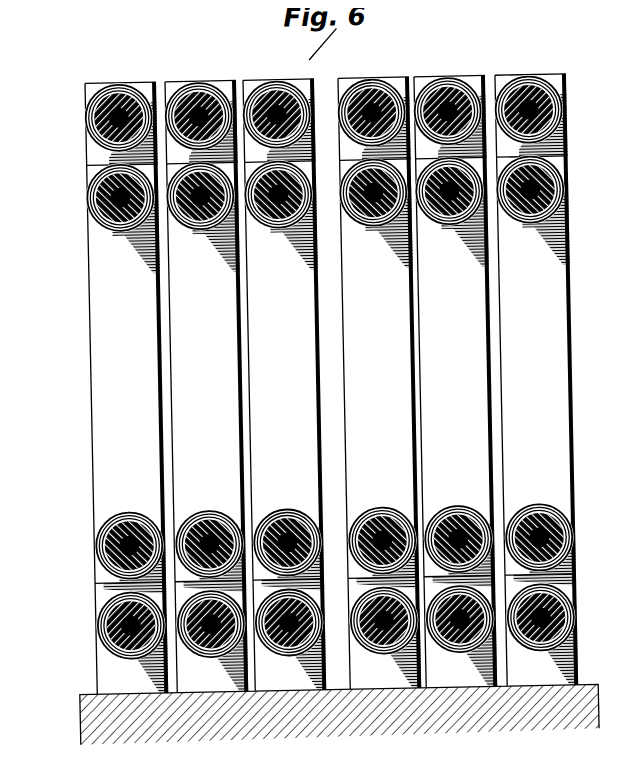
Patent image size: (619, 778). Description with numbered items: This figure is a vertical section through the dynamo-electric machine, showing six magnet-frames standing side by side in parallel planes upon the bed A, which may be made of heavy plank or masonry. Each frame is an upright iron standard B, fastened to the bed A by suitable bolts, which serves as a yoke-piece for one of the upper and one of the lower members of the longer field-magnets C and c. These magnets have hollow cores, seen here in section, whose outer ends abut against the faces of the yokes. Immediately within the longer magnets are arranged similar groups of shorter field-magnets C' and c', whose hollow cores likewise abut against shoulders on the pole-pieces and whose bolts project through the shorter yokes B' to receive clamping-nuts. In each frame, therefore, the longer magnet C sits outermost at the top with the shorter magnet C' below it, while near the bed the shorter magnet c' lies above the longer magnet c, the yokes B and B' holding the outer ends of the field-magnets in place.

The bed A is at (322, 714).
The standard B is at (326, 153).
The shorter yoke B' is at (331, 384).
The longer field-magnet C is at (325, 108).
The shorter field-magnet C' is at (327, 214).
The shorter field-magnet c' is at (334, 540).
The longer field-magnet c is at (336, 638).